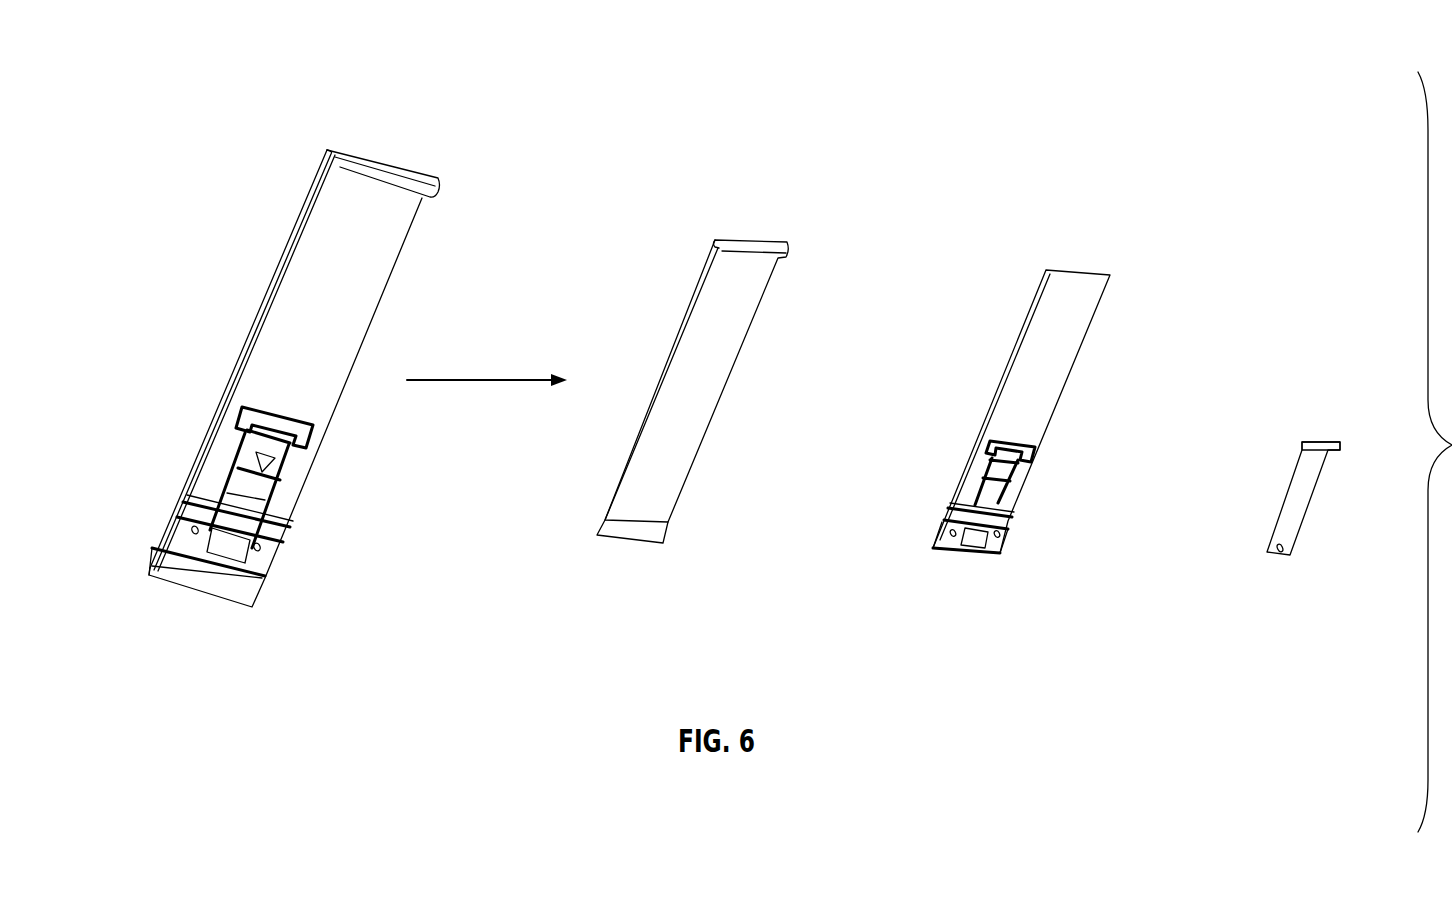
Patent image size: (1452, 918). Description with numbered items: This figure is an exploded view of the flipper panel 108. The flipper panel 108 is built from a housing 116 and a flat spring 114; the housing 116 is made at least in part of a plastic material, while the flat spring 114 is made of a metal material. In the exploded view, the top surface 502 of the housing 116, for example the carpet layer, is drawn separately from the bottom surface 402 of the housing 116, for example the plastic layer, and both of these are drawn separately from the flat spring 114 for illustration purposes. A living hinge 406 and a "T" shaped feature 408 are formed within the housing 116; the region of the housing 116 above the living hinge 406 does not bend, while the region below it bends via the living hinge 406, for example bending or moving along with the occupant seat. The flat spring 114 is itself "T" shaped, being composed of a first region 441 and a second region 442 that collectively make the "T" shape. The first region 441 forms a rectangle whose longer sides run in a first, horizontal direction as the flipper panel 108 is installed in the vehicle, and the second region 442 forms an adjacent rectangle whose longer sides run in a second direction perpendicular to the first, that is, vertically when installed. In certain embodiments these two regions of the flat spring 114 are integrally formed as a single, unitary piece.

The flipper panel 108 is at (465, 156).
The housing 116 is at (300, 275).
The "T" shaped feature 408 is at (238, 415).
The flat spring 114 is at (268, 462).
The living hinge 406 is at (275, 525).
The top surface 502 is at (748, 313).
The bottom surface 402 is at (1103, 288).
The first region 441 is at (1313, 443).
The second region 442 is at (1295, 530).